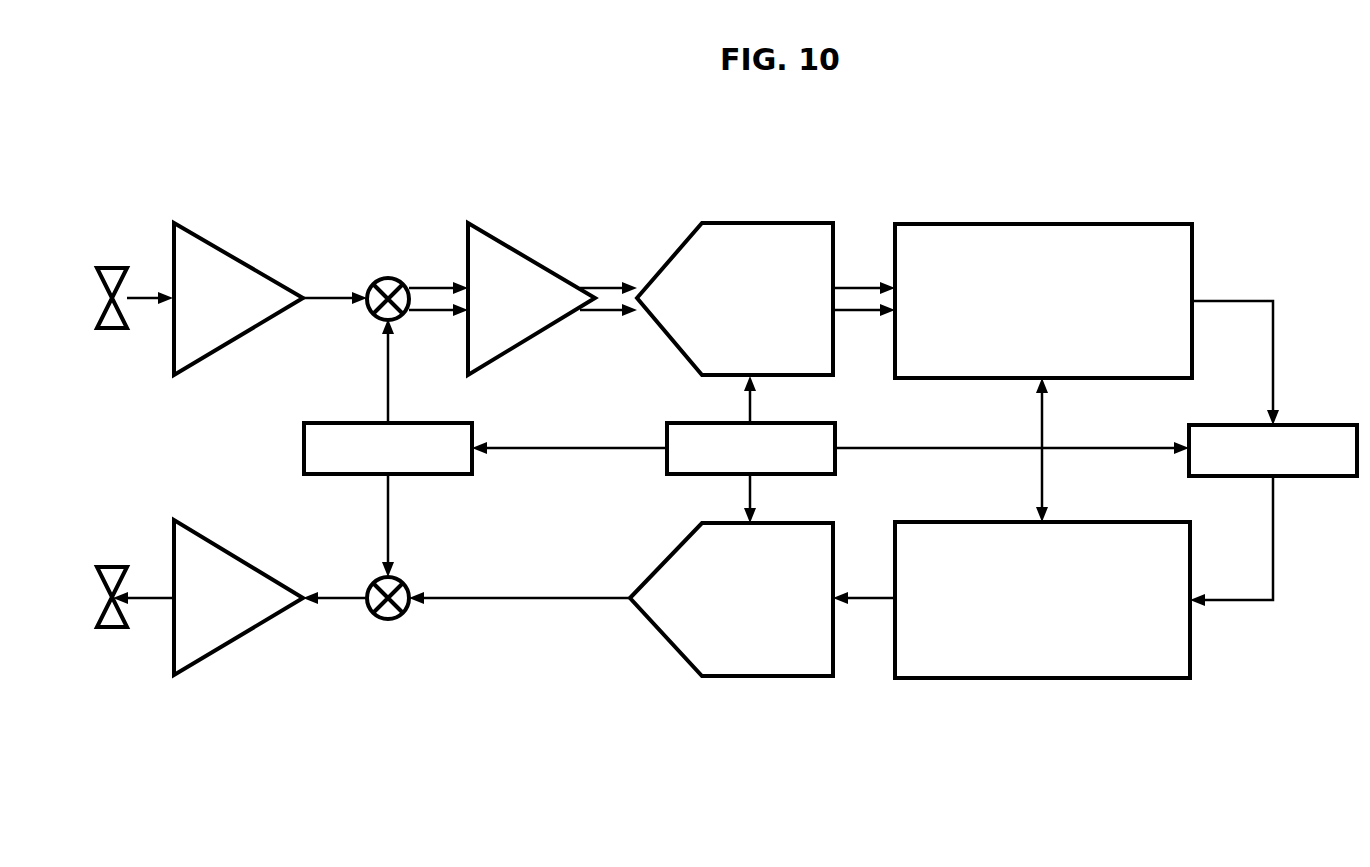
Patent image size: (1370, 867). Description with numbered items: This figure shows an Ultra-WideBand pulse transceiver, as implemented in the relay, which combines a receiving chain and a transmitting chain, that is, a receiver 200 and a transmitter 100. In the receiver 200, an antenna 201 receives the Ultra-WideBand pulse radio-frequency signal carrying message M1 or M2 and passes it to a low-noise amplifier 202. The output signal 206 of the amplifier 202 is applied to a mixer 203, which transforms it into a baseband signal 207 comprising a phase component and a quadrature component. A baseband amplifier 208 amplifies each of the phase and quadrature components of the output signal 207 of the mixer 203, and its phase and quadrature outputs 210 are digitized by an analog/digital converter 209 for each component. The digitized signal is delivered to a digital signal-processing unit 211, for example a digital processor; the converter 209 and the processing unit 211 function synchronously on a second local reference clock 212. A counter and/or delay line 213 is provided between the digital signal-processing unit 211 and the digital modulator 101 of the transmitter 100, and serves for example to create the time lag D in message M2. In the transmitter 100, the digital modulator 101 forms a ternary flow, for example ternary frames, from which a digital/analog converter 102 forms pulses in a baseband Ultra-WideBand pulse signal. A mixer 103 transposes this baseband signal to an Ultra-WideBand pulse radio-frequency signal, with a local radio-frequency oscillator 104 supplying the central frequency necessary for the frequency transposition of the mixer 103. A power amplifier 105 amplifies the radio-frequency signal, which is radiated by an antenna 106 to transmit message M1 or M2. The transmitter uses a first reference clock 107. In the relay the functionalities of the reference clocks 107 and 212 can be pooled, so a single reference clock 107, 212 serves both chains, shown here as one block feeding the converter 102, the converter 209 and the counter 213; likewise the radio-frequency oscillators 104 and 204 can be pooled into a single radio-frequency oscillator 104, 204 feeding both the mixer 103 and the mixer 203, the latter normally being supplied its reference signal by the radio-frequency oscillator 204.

The Ultra-WideBand pulse transmitter 100 is at (826, 728).
The digital modulator 101 is at (1024, 610).
The digital/analog converter 102 is at (732, 610).
The mixer 103 is at (387, 620).
The local radio-frequency oscillator 104 is at (388, 448).
The power amplifier 105 is at (207, 610).
The antenna 106 is at (110, 566).
The first reference clock 107 is at (830, 449).
The Ultra-WideBand pulse receiver 200 is at (826, 172).
The antenna 201 is at (110, 267).
The low-noise amplifier 202 is at (207, 310).
The mixer 203 is at (390, 276).
The radio-frequency oscillator 204 is at (349, 460).
The output signal 206 is at (330, 293).
The baseband signal 207 is at (435, 314).
The baseband amplifier 208 is at (502, 310).
The analog/digital converter 209 is at (732, 310).
The phase and quadrature outputs 210 is at (600, 314).
The digital signal-processing unit 211 is at (1025, 312).
The second local reference clock 212 is at (712, 460).
The counter and/or delay line 213 is at (1255, 462).